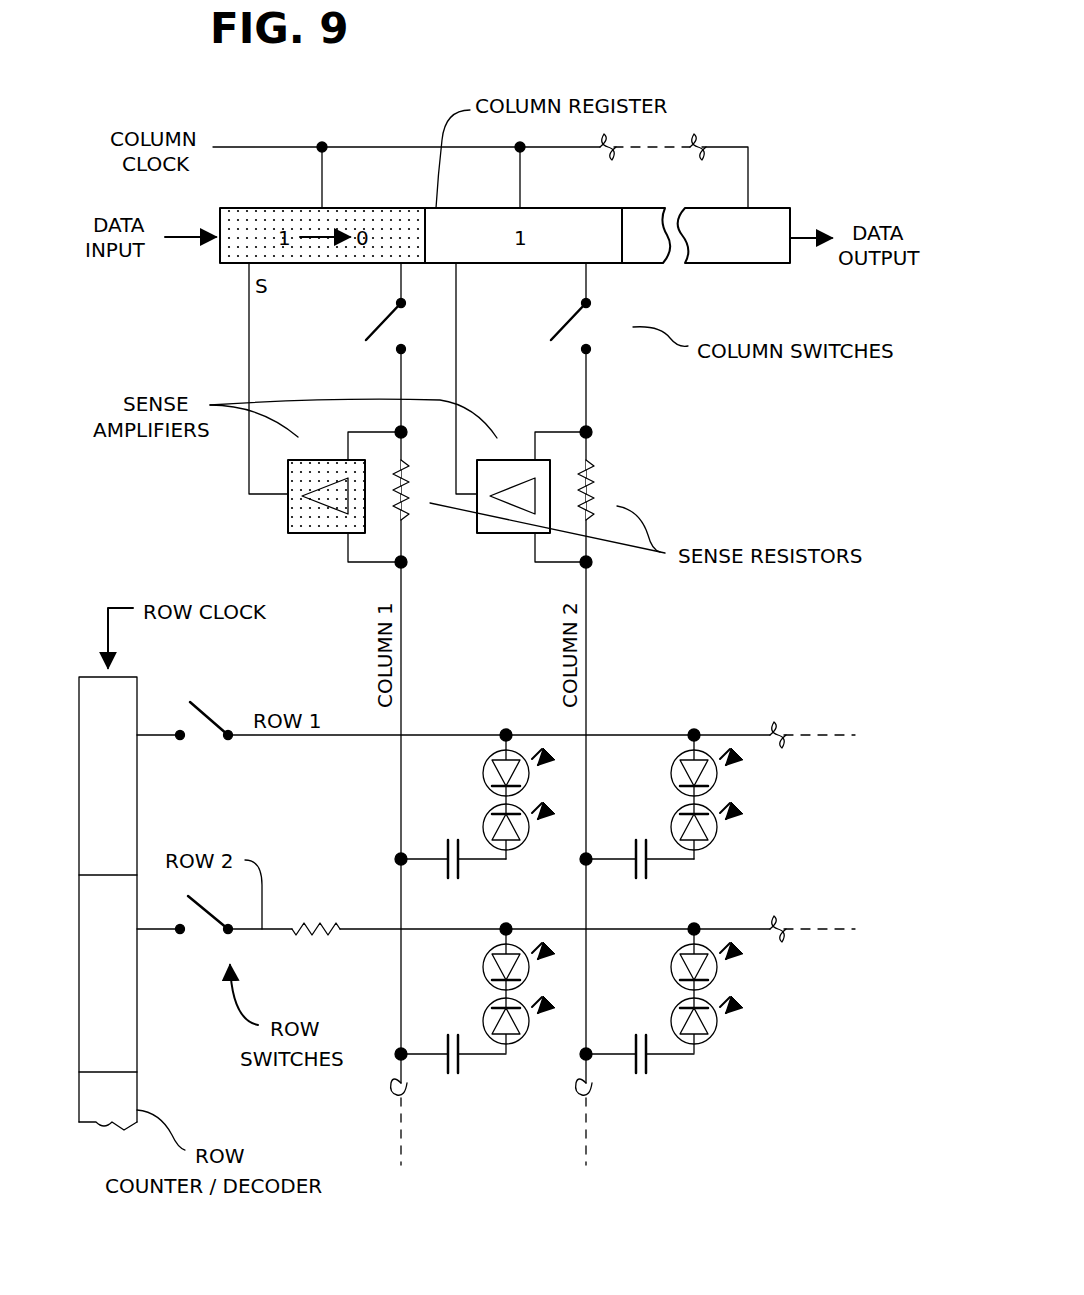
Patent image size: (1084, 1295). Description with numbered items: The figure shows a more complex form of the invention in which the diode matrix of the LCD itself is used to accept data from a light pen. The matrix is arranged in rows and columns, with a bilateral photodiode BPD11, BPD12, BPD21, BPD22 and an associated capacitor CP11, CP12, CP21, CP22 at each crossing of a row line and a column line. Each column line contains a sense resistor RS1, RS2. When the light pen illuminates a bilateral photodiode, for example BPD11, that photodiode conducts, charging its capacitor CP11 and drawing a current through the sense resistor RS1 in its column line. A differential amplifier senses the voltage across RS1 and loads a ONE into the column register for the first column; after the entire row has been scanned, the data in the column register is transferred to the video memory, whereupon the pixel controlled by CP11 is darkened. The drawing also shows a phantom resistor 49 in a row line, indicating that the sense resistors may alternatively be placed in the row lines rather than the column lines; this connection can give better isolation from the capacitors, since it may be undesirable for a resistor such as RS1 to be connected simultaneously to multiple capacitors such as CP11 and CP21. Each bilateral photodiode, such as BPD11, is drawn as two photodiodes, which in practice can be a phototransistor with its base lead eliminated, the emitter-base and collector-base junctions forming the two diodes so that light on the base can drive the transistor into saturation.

The phantom resistor 49 is at (337, 918).
The sense resistor RS1 is at (404, 520).
The sense resistor RS2 is at (590, 466).
The bilateral photodiode BPD11 is at (500, 800).
The bilateral photodiode BPD12 is at (688, 800).
The bilateral photodiode BPD21 is at (500, 994).
The bilateral photodiode BPD22 is at (688, 994).
The capacitor CP11 is at (462, 868).
The capacitor CP12 is at (650, 868).
The capacitor CP21 is at (462, 1063).
The capacitor CP22 is at (650, 1063).